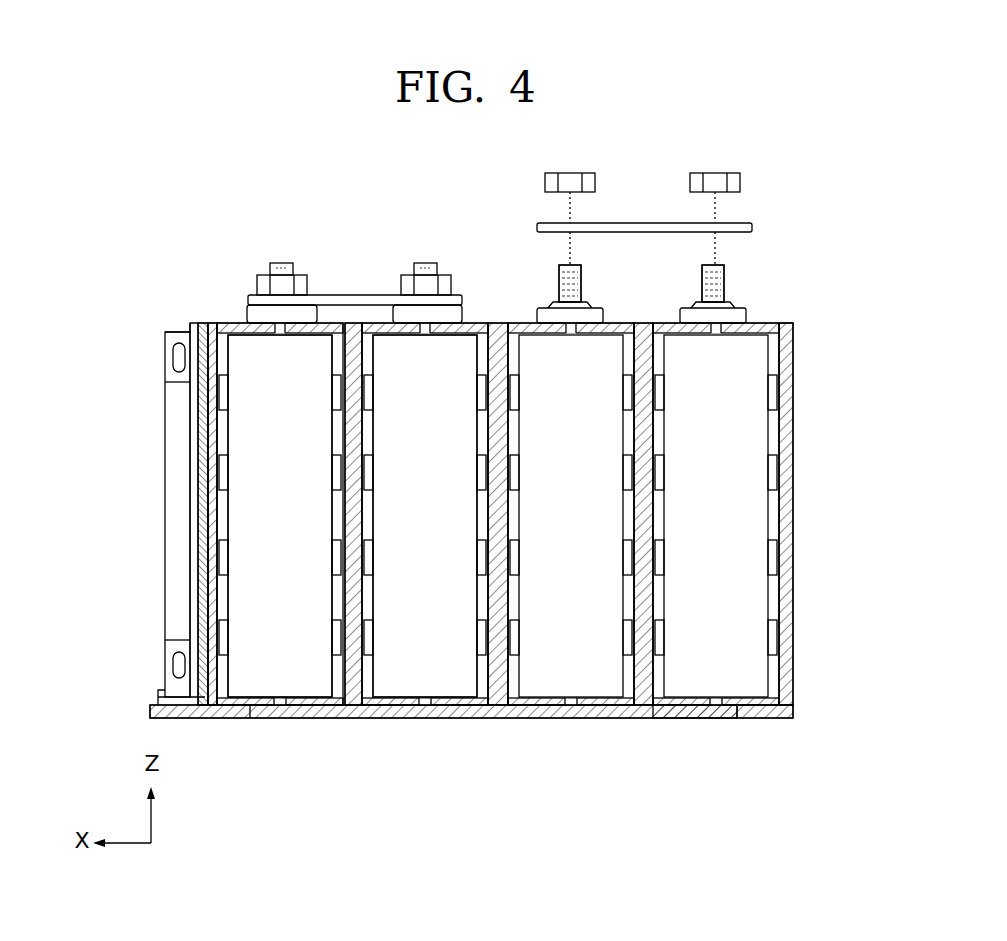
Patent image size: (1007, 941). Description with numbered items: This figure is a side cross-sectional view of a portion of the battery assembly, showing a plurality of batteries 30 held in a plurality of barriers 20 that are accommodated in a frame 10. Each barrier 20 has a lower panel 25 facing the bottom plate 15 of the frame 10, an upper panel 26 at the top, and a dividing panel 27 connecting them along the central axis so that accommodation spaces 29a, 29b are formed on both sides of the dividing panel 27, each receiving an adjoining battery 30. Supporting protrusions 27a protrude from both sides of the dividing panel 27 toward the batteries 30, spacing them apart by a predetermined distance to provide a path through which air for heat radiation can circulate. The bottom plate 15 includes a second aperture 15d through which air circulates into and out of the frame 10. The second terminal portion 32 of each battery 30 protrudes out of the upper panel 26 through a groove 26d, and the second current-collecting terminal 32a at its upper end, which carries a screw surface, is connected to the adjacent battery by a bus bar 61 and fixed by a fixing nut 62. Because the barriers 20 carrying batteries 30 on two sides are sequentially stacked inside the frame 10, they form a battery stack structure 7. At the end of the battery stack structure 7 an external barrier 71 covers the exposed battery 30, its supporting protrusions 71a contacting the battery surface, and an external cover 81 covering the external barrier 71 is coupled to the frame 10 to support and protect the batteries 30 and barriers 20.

The battery stack structure 7 is at (505, 597).
The frame 10 is at (452, 597).
The bottom plate 15 is at (477, 744).
The second aperture 15d is at (707, 712).
The barrier 20 is at (352, 572).
The lower panel 25 is at (316, 705).
The upper panel 26 is at (338, 277).
The groove 26d is at (283, 318).
The dividing panel 27 is at (361, 675).
The supporting protrusion 27a is at (376, 645).
The accommodation space 29a is at (486, 682).
The accommodation space 29b is at (513, 685).
The battery 30 is at (291, 682).
The second terminal portion 32 is at (666, 291).
The second current-collecting terminal 32a is at (583, 282).
The bus bar 61 is at (752, 228).
The fixing nut 62 is at (740, 183).
The external barrier 71 is at (205, 495).
The supporting protrusion 71a is at (215, 546).
The external cover 81 is at (175, 425).